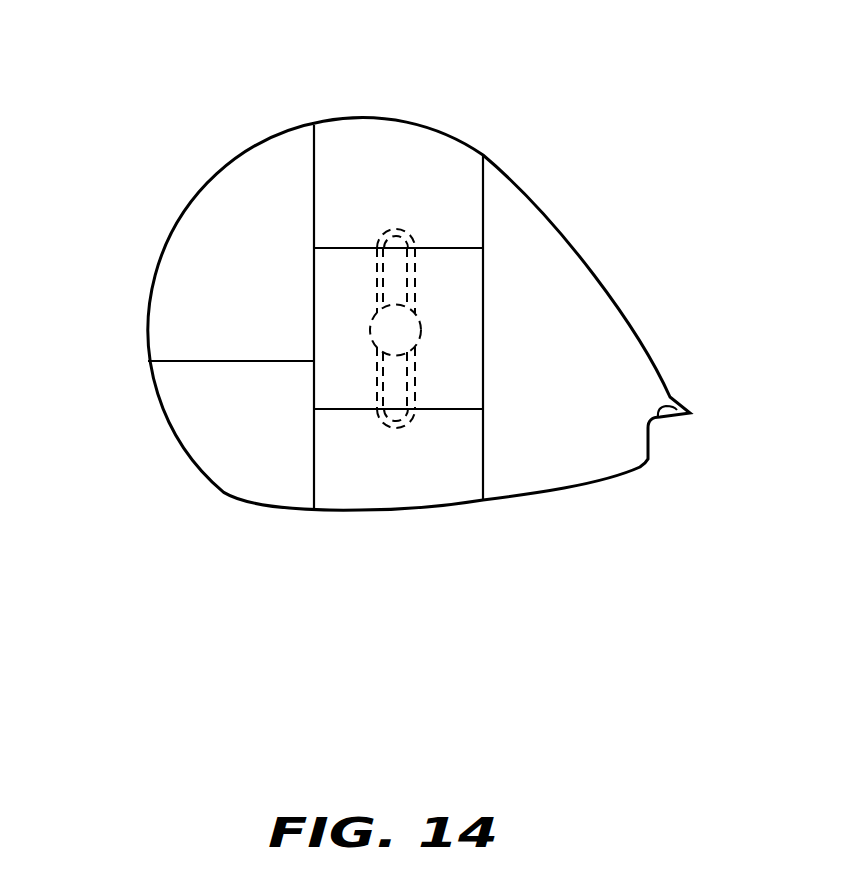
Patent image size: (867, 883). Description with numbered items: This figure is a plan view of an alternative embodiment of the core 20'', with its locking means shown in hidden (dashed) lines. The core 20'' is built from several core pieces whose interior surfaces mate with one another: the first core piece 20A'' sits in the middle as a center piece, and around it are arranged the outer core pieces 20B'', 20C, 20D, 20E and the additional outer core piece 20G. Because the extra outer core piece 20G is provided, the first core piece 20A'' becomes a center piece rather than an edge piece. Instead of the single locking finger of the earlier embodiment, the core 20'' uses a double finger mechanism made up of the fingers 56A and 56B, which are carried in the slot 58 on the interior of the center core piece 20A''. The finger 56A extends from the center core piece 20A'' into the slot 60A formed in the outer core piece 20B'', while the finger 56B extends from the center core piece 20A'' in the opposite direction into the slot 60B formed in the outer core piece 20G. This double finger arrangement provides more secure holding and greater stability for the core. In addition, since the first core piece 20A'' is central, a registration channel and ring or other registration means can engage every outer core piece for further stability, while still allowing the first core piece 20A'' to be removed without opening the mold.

The core 20'' is at (419, 400).
The first core piece 20A'' is at (614, 328).
The outer core piece 20B'' is at (398, 136).
The core piece 20C is at (570, 290).
The core piece 20D is at (187, 258).
The core piece 20E is at (235, 473).
The outer core piece 20G is at (463, 480).
The slot 58 is at (373, 280).
The slot 60A is at (398, 229).
The slot 60B is at (403, 427).
The finger 56A is at (418, 248).
The finger 56B is at (383, 420).